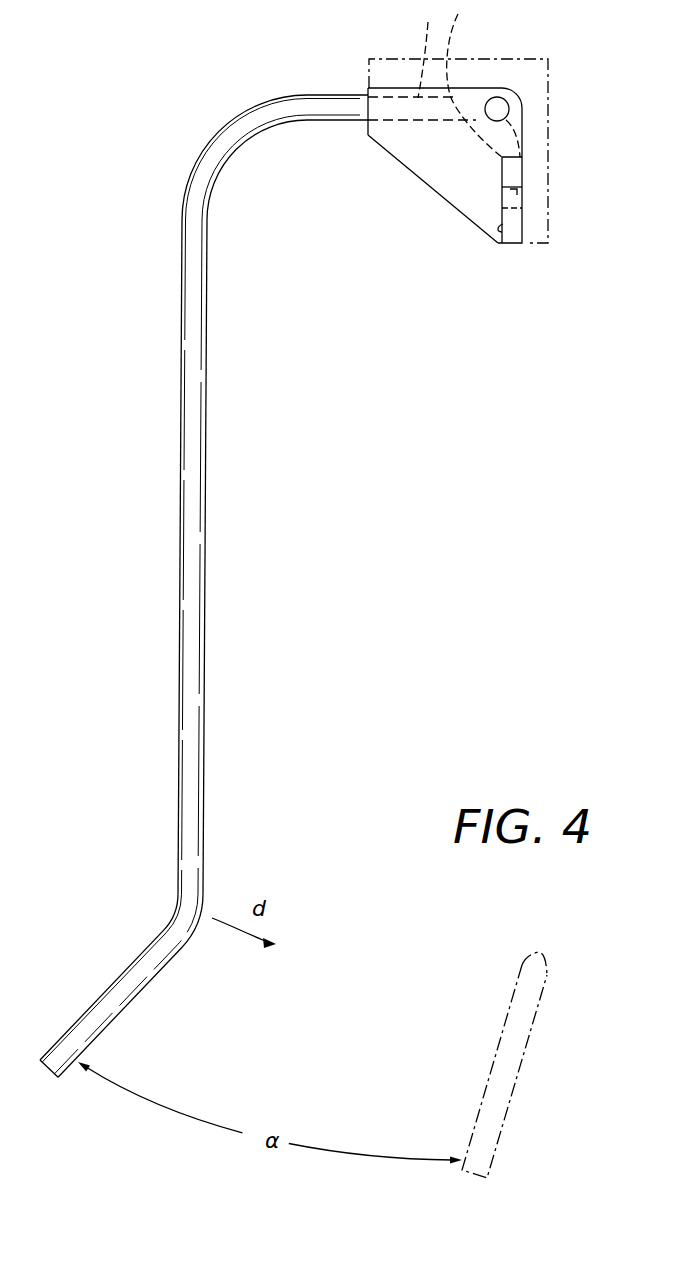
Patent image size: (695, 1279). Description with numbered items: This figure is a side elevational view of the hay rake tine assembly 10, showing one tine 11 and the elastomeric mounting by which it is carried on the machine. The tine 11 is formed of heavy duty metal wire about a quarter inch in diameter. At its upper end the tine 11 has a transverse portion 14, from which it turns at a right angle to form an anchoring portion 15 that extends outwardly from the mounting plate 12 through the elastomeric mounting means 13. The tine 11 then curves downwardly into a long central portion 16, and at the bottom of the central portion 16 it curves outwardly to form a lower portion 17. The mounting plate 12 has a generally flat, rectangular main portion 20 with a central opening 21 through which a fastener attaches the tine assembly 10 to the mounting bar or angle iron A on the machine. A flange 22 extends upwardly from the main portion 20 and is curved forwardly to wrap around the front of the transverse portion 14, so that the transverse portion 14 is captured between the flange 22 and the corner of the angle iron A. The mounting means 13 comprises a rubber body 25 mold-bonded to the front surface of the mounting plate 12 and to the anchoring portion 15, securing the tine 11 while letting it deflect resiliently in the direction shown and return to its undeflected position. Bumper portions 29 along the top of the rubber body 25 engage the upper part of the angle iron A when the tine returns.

The hay rake tine assembly 10 is at (433, 320).
The tine 11 is at (206, 598).
The mounting plate 12 is at (505, 252).
The elastomeric mounting means 13 is at (446, 193).
The transverse portion 14 is at (503, 116).
The anchoring portion 15 is at (428, 22).
The central portion 16 is at (201, 393).
The lower portion 17 is at (120, 981).
The main portion 20 is at (500, 222).
The central opening 21 is at (518, 197).
The flange 22 is at (483, 79).
The rubber body 25 is at (402, 160).
The bumper portions 29 is at (380, 88).
The angle iron A is at (498, 58).